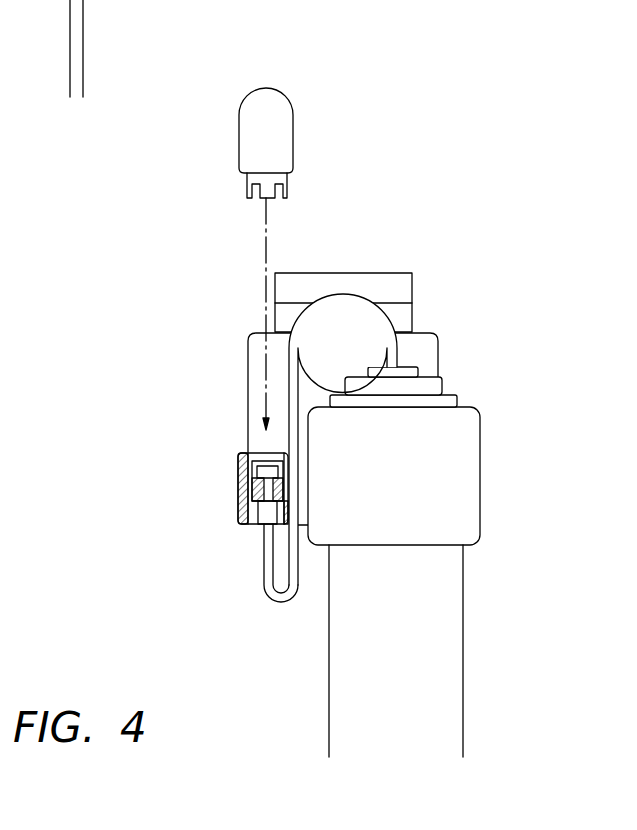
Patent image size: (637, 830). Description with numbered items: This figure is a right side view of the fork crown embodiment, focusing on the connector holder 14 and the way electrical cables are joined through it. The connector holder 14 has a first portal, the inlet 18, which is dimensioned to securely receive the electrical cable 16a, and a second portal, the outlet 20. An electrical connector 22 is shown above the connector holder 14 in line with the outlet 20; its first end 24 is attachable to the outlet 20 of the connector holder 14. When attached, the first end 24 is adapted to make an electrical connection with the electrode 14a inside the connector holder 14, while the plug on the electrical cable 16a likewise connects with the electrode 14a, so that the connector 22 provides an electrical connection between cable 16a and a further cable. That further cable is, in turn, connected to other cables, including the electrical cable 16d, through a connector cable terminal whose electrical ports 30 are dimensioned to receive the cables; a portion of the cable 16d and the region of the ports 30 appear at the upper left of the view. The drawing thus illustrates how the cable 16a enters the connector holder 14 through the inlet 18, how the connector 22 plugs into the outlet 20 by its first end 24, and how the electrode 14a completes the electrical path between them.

The connector holder 14 is at (240, 488).
The electrode 14a is at (244, 461).
The electrical cable 16a is at (282, 605).
The electrical cable 16d is at (100, 0).
The inlet 18 is at (245, 537).
The outlet 20 is at (254, 449).
The electrical connector 22 is at (267, 115).
The first end 24 is at (285, 185).
The electrical ports 30 is at (11, 6).